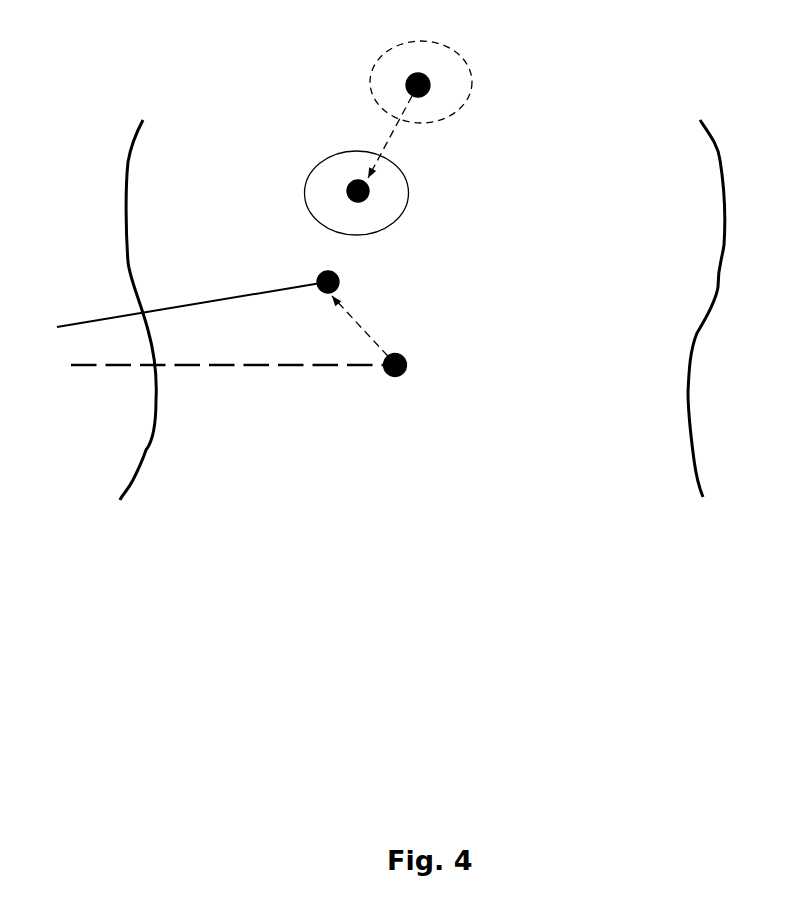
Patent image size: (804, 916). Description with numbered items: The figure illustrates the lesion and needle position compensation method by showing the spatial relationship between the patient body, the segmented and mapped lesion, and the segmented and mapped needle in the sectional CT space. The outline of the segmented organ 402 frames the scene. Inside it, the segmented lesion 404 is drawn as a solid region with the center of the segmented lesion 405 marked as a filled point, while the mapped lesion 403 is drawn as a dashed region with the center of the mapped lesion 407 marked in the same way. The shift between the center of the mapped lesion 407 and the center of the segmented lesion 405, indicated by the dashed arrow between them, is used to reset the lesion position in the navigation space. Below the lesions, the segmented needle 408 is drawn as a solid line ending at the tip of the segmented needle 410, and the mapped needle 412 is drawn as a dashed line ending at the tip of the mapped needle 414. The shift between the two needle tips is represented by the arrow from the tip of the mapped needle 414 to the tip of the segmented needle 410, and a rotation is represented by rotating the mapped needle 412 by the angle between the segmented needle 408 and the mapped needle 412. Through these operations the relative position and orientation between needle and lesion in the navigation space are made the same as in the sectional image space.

The segmented organ 402 is at (687, 492).
The mapped lesion 403 is at (472, 97).
The segmented lesion 404 is at (408, 178).
The center of the segmented lesion 405 is at (348, 188).
The center of the mapped lesion 407 is at (406, 85).
The segmented needle 408 is at (218, 296).
The tip of the segmented needle 410 is at (338, 276).
The mapped needle 412 is at (317, 370).
The tip of the mapped needle 414 is at (402, 356).